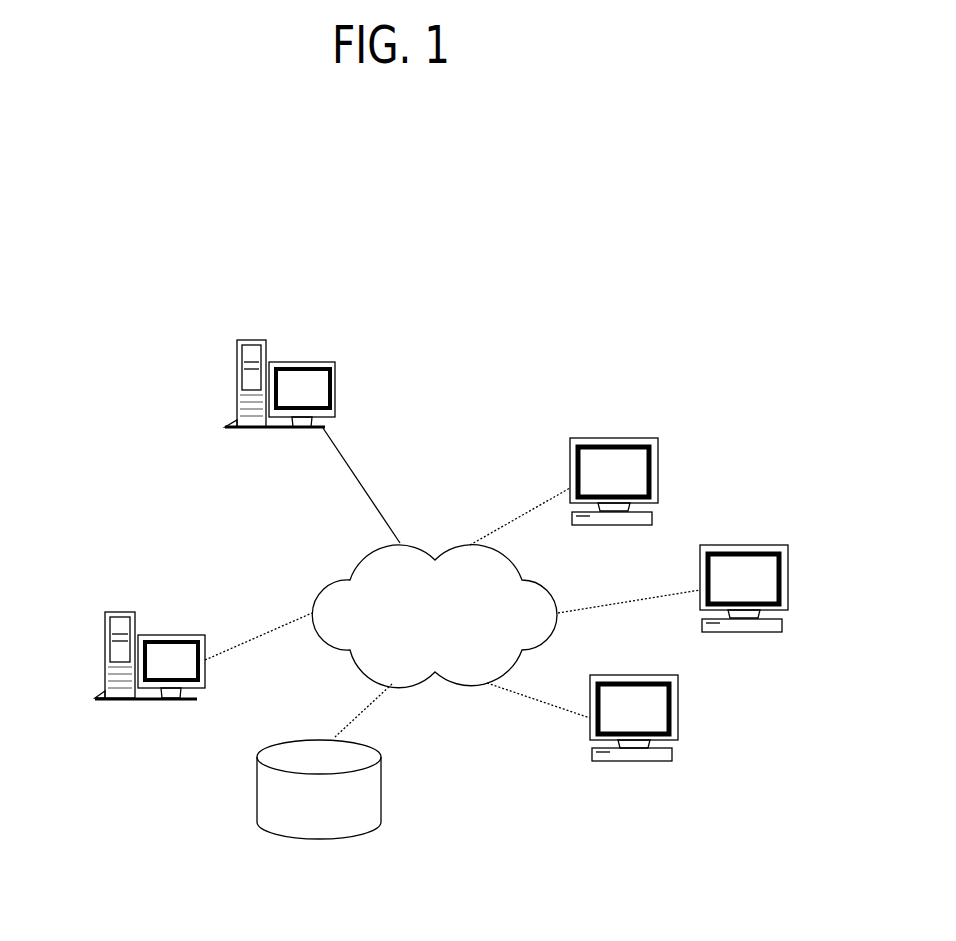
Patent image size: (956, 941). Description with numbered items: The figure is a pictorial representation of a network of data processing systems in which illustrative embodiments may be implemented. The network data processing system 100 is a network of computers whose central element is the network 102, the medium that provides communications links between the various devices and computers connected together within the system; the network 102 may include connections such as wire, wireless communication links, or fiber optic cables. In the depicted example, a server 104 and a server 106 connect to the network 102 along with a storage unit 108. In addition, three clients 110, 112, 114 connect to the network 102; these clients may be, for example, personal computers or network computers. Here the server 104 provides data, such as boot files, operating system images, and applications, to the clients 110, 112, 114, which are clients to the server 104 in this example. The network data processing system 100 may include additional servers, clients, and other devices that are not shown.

The network data processing system 100 is at (141, 485).
The network 102 is at (420, 636).
The server 104 is at (300, 362).
The server 106 is at (170, 635).
The storage unit 108 is at (318, 838).
The client 110 is at (612, 438).
The client 112 is at (743, 545).
The client 114 is at (678, 710).